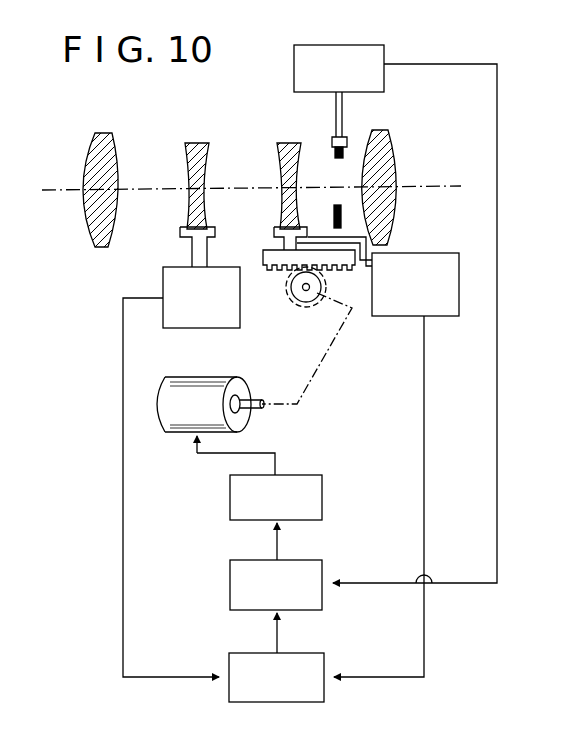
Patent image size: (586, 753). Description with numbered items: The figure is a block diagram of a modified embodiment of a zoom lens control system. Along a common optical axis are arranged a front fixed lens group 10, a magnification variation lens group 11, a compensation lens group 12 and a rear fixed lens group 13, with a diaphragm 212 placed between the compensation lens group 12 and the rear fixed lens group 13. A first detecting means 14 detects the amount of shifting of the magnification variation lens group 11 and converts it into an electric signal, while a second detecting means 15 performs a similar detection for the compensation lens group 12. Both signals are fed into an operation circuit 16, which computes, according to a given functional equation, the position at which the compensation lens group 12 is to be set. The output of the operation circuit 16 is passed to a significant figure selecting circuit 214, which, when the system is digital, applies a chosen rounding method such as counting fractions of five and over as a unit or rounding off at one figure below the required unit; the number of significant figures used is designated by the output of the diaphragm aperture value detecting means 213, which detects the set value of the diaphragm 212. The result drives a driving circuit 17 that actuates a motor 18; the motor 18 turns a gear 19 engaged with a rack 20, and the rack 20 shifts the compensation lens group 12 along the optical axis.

The fixed lens group 10 is at (108, 136).
The magnification variation lens group 11 is at (197, 143).
The compensation lens group 12 is at (282, 143).
The fixed lens group 13 is at (393, 136).
The detection means 14 is at (181, 472).
The detecting means 15 is at (396, 465).
The operation circuit 16 is at (276, 657).
The driving circuit 17 is at (276, 497).
The motor 18 is at (165, 408).
The gear 19 is at (303, 302).
The rack 20 is at (272, 268).
The diaphragm 212 is at (345, 157).
The diaphragm aperture value detecting means 213 is at (395, 314).
The significant figure selecting circuit 214 is at (331, 566).